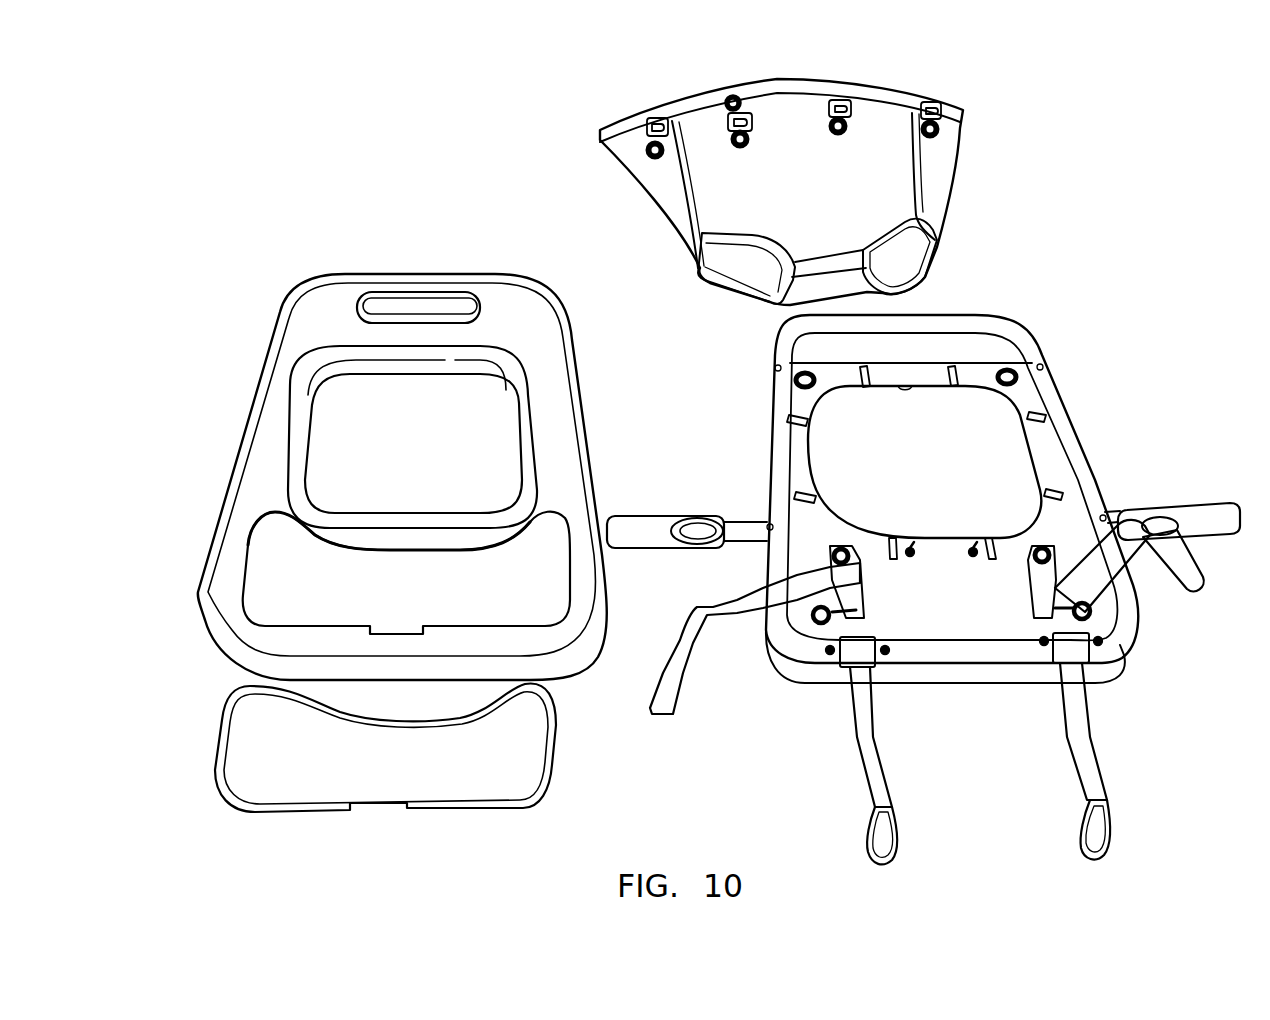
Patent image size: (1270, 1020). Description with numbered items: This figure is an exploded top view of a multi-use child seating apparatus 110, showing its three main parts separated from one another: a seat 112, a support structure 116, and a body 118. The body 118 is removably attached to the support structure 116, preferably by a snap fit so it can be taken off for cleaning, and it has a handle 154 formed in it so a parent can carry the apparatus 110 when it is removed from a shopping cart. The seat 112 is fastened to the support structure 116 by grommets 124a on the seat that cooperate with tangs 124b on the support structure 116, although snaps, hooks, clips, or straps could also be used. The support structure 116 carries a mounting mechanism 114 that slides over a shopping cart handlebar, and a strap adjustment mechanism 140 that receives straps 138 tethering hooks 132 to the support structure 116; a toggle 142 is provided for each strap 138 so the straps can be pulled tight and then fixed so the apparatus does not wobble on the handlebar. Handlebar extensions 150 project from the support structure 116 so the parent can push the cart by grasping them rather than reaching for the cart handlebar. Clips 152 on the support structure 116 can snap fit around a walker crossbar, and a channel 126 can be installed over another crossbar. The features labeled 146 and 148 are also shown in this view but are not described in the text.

The child seating apparatus 110 is at (1058, 196).
The seat 112 is at (830, 81).
The mounting mechanism 114 is at (1138, 643).
The support structure 116 is at (1020, 324).
The body 118 is at (578, 410).
The grommets 124a is at (962, 124).
The tangs 124b is at (1062, 492).
The channel 126 is at (1112, 667).
The hooks 132 is at (892, 832).
The straps 138 is at (858, 735).
The strap adjustment mechanism 140 is at (1105, 603).
The toggle 142 is at (862, 612).
The back panel 146 is at (930, 593).
The tray recess 148 is at (272, 518).
The handlebar extensions 150 is at (650, 526).
The clips 152 is at (912, 390).
The handle 154 is at (418, 298).